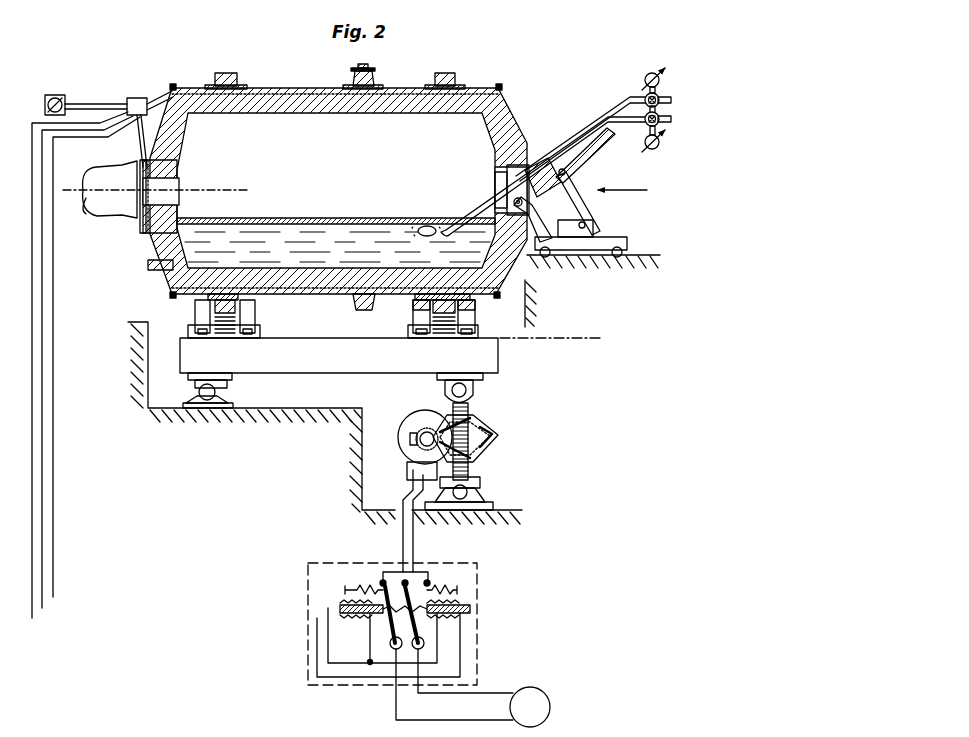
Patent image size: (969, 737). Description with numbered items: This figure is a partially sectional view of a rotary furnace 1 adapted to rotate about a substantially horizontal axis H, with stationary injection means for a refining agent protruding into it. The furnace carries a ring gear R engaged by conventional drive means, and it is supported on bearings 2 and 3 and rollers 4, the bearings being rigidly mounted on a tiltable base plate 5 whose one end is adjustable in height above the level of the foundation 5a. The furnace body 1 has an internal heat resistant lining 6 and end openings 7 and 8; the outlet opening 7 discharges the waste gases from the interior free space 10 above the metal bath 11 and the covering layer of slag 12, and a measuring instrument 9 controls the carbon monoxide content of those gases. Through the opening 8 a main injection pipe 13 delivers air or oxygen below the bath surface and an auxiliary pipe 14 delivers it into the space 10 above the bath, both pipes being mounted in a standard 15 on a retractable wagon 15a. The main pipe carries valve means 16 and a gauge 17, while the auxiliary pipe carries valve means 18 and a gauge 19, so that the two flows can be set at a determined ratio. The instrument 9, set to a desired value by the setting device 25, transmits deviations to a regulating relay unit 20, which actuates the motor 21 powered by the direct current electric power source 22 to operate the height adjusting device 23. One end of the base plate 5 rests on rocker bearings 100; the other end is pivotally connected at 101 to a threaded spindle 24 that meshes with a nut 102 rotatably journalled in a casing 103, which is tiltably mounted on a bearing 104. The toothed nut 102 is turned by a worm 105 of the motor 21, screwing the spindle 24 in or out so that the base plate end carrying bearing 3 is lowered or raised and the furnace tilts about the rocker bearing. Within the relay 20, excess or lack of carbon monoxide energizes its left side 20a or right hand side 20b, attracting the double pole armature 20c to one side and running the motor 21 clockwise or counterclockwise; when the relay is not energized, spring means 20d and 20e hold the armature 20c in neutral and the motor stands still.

The rotary furnace 1 is at (283, 86).
The ring gear R is at (352, 71).
The internal heat resistant lining 6 is at (278, 100).
The interior free space 10 is at (340, 181).
The layer of slag 12 is at (279, 211).
The metal bath 11 is at (341, 258).
The outlet opening 7 is at (178, 186).
The horizontal axis H is at (80, 190).
The setting device 25 is at (55, 95).
The measuring instrument 9 is at (138, 98).
The opening 8 is at (496, 176).
The auxiliary pipe 14 is at (464, 204).
The main injection pipe 13 is at (440, 223).
The valve means 18 is at (659, 100).
The valve means 16 is at (659, 119).
The gauge 19 is at (649, 78).
The gauge 17 is at (659, 145).
The standard 15 is at (580, 185).
The retractable wagon 15a is at (612, 238).
The foundation 5a is at (546, 339).
The tiltable base plate 5 is at (343, 368).
The bearing 2 is at (192, 312).
The bearing 3 is at (478, 313).
The rollers 4 is at (234, 318).
The rocker bearings 100 is at (218, 391).
The pivot connection 101 is at (451, 389).
The threaded spindle 24 is at (470, 468).
The height adjusting device 23 is at (495, 422).
The casing 103 is at (476, 418).
The nut 102 is at (480, 453).
The motor 21 is at (421, 422).
The worm 105 is at (426, 438).
The bearing 104 is at (469, 492).
The regulating relay unit 20 is at (477, 641).
The double pole armature 20c is at (400, 617).
The spring means 20d is at (362, 588).
The spring means 20e is at (440, 588).
The left side of relay 20a is at (350, 603).
The right hand side of relay 20b is at (469, 608).
The electric power source 22 is at (544, 691).